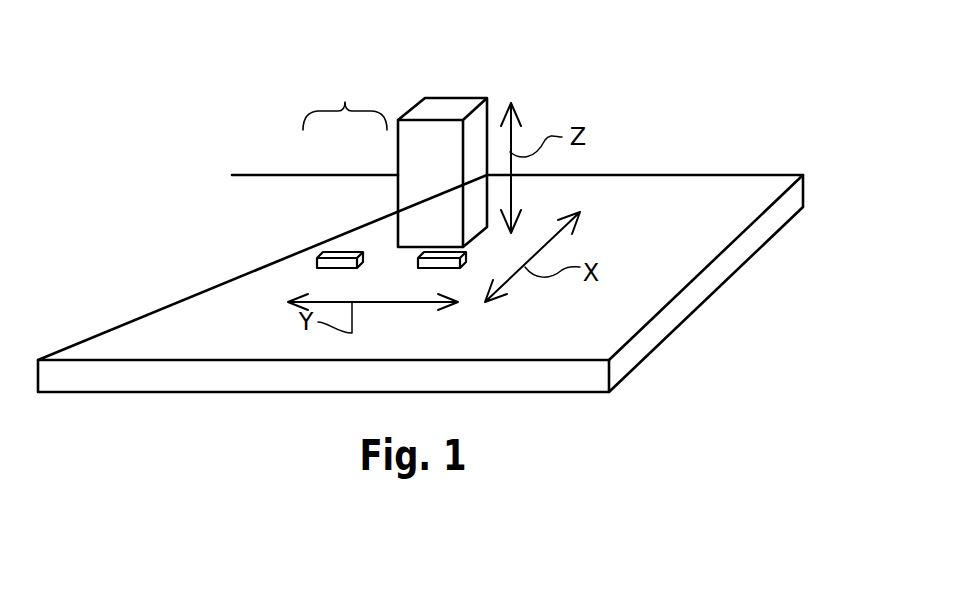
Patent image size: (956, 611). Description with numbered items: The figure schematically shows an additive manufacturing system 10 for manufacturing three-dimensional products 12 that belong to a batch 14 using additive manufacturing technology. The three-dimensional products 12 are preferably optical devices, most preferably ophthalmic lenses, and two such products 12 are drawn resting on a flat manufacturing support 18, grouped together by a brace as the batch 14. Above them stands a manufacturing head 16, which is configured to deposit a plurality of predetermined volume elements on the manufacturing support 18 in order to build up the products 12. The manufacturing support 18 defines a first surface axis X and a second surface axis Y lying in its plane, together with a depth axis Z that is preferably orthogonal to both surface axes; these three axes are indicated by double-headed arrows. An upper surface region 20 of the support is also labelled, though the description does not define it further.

The system 10 is at (757, 112).
The three-dimensional products 12 is at (337, 256).
The batch 14 is at (345, 102).
The manufacturing head 16 is at (445, 105).
The manufacturing support 18 is at (755, 191).
The substrate surface 20 is at (700, 202).